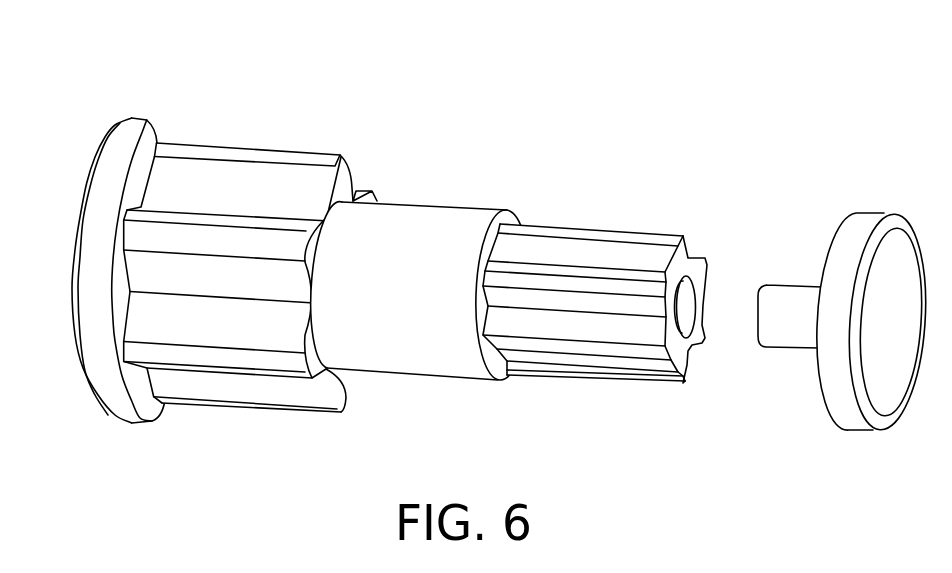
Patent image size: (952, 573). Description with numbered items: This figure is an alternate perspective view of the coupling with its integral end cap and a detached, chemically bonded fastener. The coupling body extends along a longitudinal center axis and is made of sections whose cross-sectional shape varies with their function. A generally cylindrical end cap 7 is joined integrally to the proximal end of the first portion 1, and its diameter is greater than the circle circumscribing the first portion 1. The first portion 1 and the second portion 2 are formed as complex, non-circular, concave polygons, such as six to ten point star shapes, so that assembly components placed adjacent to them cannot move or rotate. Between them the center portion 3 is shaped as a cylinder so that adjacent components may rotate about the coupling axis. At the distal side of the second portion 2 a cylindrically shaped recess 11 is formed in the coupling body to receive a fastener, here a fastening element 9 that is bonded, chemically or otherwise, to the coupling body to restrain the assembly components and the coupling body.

The end cap 7 is at (112, 170).
The first portion 1 is at (235, 187).
The center portion 3 is at (416, 225).
The second portion 2 is at (592, 255).
The cylindrically shaped recess 11 is at (688, 306).
The fastening element 9 is at (888, 290).